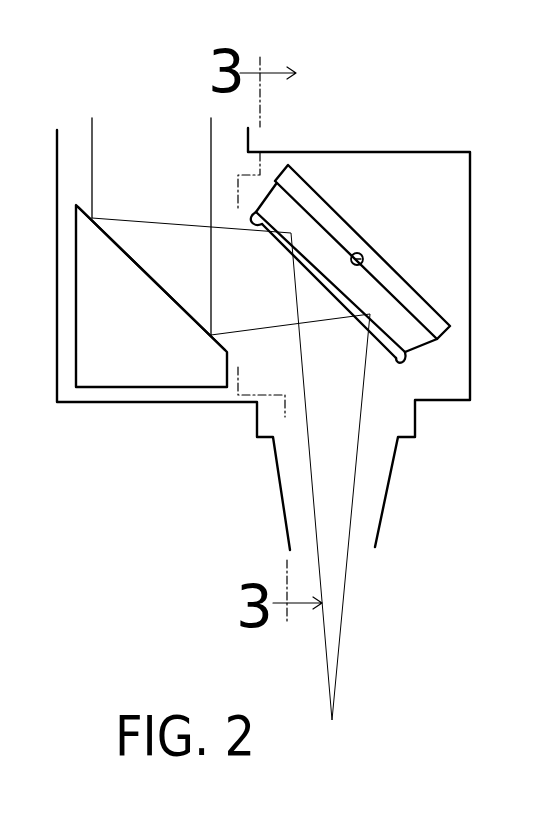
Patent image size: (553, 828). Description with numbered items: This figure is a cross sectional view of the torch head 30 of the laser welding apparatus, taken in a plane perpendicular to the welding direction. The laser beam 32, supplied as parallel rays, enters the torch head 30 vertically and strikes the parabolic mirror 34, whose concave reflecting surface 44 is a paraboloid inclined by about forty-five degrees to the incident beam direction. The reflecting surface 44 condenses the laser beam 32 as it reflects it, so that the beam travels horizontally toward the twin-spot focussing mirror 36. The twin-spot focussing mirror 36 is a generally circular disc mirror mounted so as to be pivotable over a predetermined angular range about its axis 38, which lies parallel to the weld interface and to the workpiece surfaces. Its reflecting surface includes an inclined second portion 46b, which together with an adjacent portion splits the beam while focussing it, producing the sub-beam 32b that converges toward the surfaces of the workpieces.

The torch head 30 is at (405, 95).
The laser beam 32 is at (92, 150).
The second sub-beam 32b is at (342, 649).
The parabolic mirror 34 is at (112, 377).
The twin-spot focussing mirror 36 is at (305, 221).
The axis 38 is at (370, 248).
The reflecting surface 44 is at (173, 296).
The second portion 46b is at (352, 298).